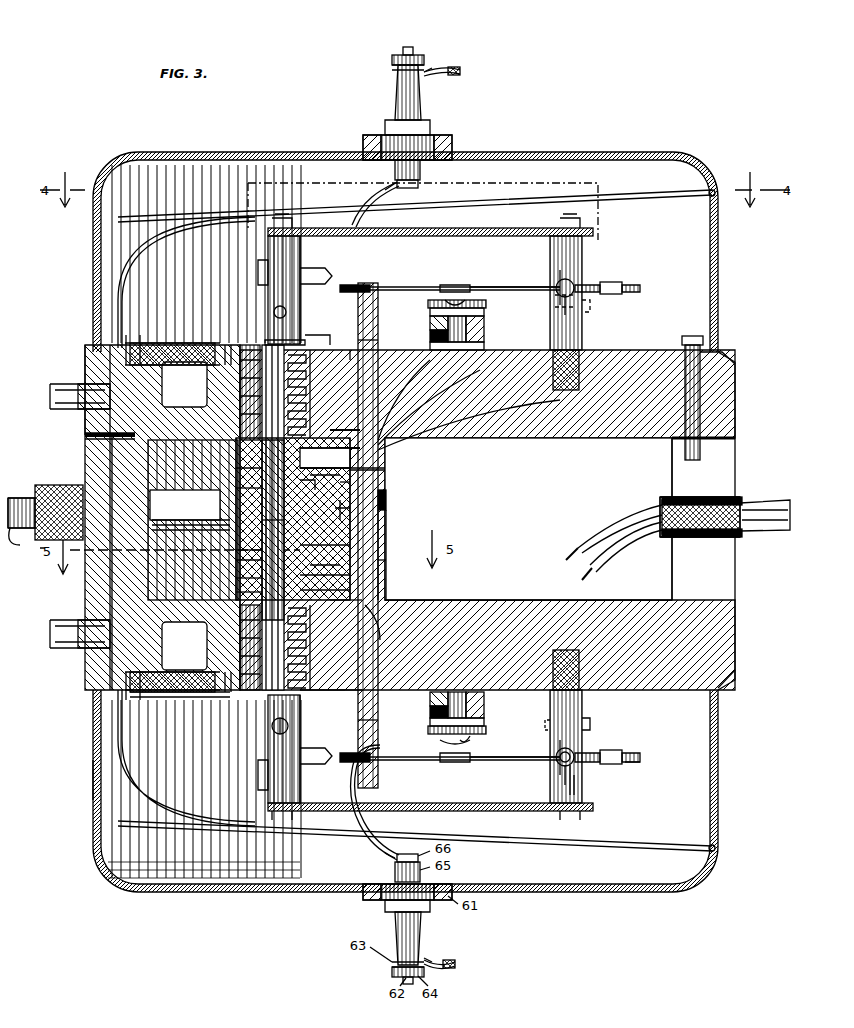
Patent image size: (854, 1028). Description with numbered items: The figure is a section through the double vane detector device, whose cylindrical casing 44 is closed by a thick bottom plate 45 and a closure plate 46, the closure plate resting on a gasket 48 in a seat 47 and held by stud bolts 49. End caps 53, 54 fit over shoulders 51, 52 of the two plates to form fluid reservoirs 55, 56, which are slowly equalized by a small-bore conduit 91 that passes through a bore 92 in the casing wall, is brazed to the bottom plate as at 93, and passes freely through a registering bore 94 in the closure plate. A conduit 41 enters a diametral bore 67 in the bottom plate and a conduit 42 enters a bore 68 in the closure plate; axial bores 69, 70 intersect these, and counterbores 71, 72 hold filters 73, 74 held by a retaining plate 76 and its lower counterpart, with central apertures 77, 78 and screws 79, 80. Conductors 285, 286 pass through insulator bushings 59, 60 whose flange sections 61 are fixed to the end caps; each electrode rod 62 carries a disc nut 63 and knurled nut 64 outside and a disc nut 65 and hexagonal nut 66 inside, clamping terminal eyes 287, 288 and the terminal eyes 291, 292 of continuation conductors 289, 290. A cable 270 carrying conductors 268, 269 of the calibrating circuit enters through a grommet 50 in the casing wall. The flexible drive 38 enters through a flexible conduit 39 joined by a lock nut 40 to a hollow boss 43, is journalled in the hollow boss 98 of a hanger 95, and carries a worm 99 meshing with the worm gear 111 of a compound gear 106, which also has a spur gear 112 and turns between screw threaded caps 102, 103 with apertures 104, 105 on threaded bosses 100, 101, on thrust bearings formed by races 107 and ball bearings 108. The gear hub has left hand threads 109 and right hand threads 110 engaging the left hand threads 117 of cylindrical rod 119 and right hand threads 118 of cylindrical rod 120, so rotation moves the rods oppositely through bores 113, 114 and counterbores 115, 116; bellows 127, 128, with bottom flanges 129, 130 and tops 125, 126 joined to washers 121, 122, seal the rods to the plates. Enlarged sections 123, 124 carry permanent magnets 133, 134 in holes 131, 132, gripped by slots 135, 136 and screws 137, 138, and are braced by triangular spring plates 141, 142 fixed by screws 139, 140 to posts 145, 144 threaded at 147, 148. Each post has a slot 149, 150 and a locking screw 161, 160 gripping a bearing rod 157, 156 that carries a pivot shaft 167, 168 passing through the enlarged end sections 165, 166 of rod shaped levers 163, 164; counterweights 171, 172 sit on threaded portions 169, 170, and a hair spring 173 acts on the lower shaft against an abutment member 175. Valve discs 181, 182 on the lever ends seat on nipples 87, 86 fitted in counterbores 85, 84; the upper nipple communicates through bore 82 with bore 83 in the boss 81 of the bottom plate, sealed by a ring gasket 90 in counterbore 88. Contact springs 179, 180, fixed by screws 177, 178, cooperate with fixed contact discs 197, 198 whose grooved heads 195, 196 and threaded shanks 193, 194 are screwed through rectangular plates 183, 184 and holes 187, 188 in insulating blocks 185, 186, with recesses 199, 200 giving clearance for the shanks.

The flexible drive 38 is at (21, 527).
The flexible conduit 39 is at (20, 497).
The second lock nut 40 is at (62, 486).
The conduit 41 is at (52, 640).
The conduit 42 is at (64, 392).
The hollow boss 43 is at (193, 520).
The cylindrical casing 44 is at (725, 583).
The bottom plate 45 is at (515, 612).
The closure plate 46 is at (503, 425).
The seat 47 is at (672, 444).
The gasket 48 is at (85, 436).
The stud bolts 49 is at (700, 410).
The grommet 50 is at (740, 498).
The shoulder 51 is at (726, 672).
The shoulder 52 is at (730, 372).
The end cap 53 is at (92, 795).
The end cap 54 is at (100, 257).
The fluid reservoir 55 is at (262, 875).
The fluid reservoir 56 is at (555, 175).
The insulator bushing 59 is at (396, 918).
The insulator bushing 60 is at (396, 113).
The metal flange section 61 is at (450, 148).
The electrode rod 62 is at (410, 55).
The disc nut 63 is at (392, 70).
The knurled nut 64 is at (420, 76).
The disc nut 65 is at (420, 172).
The hexagonal nut 66 is at (418, 185).
The bore 67 is at (80, 622).
The bore 68 is at (82, 388).
The bore 69 is at (184, 646).
The bore 70 is at (184, 384).
The counterbore 71 is at (130, 672).
The counterbore 72 is at (130, 350).
The filter 73 is at (126, 684).
The filter 74 is at (130, 345).
The retaining plate 76 is at (135, 340).
The central aperture 77 is at (180, 697).
The central aperture 78 is at (126, 337).
The screws 79 is at (225, 690).
The screws 80 is at (140, 337).
The boss 81 is at (378, 478).
The bore 82 is at (469, 427).
The bore 83 is at (387, 515).
The threaded counterbore 84 is at (356, 372).
The threaded counterbore 85 is at (390, 630).
The nipple 86 is at (362, 340).
The nipple 87 is at (360, 720).
The counterbore 88 is at (429, 412).
The ring gasket 90 is at (404, 407).
The conduit 91 is at (500, 200).
The bore 92 is at (110, 570).
The securing joint 93 is at (130, 684).
The registering bore 94 is at (108, 416).
The hanger 95 is at (386, 565).
The hollow boss 98 is at (387, 495).
The worm 99 is at (347, 483).
The threaded boss 100 is at (327, 450).
The threaded boss 101 is at (327, 597).
The screw threaded cap 102 is at (385, 468).
The screw threaded cap 103 is at (327, 581).
The central aperture 104 is at (328, 457).
The central aperture 105 is at (236, 578).
The compound gear 106 is at (318, 482).
The disc type races 107 is at (332, 517).
The ball bearings 108 is at (236, 468).
The left hand threads 109 is at (262, 550).
The right hand threads 110 is at (236, 488).
The worm gear 111 is at (338, 507).
The spur gear 112 is at (315, 545).
The bore 113 is at (236, 592).
The bore 114 is at (236, 448).
The counterbore 115 is at (240, 630).
The counterbore 116 is at (240, 400).
The left hand threads 117 is at (284, 528).
The right hand threads 118 is at (284, 513).
The cylindrical rod 119 is at (300, 604).
The cylindrical rod 120 is at (362, 436).
The washer 121 is at (345, 692).
The washer 122 is at (317, 330).
The outer enlarged section 123 is at (272, 724).
The outer enlarged section 124 is at (262, 288).
The top 125 is at (323, 696).
The top 126 is at (265, 340).
The expansible bellows 127 is at (306, 660).
The expansible bellows 128 is at (306, 385).
The bottom flange 129 is at (310, 622).
The bottom flange 130 is at (310, 400).
The diametrically extending hole 131 is at (268, 768).
The diametrically extending hole 132 is at (268, 260).
The cylindrical permanent magnet 133 is at (308, 764).
The cylindrical permanent magnet 134 is at (323, 268).
The slot 135 is at (295, 790).
The slot 136 is at (300, 260).
The screw 137 is at (300, 722).
The screw 138 is at (286, 310).
The screw 139 is at (282, 820).
The screw 140 is at (282, 218).
The triangular spring bracing plate 141 is at (385, 811).
The triangular spring plate 142 is at (398, 228).
The post 144 is at (582, 330).
The post 145 is at (582, 795).
The threaded end 147 is at (580, 692).
The threaded ends 148 is at (590, 360).
The longitudinal slot 149 is at (582, 715).
The longitudinal slot 150 is at (570, 282).
The bearing rod 156 is at (560, 280).
The bearing rod 157 is at (558, 752).
The locking screw 160 is at (590, 306).
The locking screw 161 is at (590, 725).
The rod shaped lever 163 is at (430, 760).
The rod shaped lever 164 is at (405, 286).
The enlarged end section 165 is at (558, 762).
The enlarged end section 166 is at (590, 285).
The pivot shaft 167 is at (563, 770).
The pivot shaft 168 is at (562, 296).
The threaded portion 169 is at (622, 756).
The threaded portion 170 is at (640, 288).
The counterweight 171 is at (640, 759).
The counterweight 172 is at (612, 282).
The hair spring 173 is at (572, 768).
The abutment member 175 is at (575, 785).
The screw 177 is at (485, 760).
The screw 178 is at (480, 286).
The movable contact spring 179 is at (455, 762).
The movable spring contact element 180 is at (452, 285).
The valve disc 181 is at (355, 762).
The valve disc 182 is at (363, 285).
The rectangular plate 183 is at (485, 720).
The rectangular plate 184 is at (430, 320).
The insulating block 185 is at (485, 700).
The insulating block 186 is at (430, 334).
The hole 187 is at (430, 712).
The hole 188 is at (430, 345).
The screw threaded shank 193 is at (487, 729).
The screw threaded shank 194 is at (485, 312).
The grooved head 195 is at (440, 740).
The grooved head 196 is at (487, 304).
The contact disc 197 is at (472, 738).
The contact disc 198 is at (441, 293).
The recess 199 is at (430, 698).
The recess 200 is at (485, 336).
The conductor 268 is at (612, 522).
The conductor 269 is at (600, 545).
The cable 270 is at (765, 523).
The conductor 285 is at (448, 966).
The conductor 286 is at (462, 71).
The terminal eye 287 is at (428, 958).
The terminal eye 288 is at (430, 80).
The continuation conductor 289 is at (362, 842).
The continuation conductor 290 is at (370, 196).
The terminal eye 291 is at (384, 856).
The terminal eye 292 is at (380, 192).